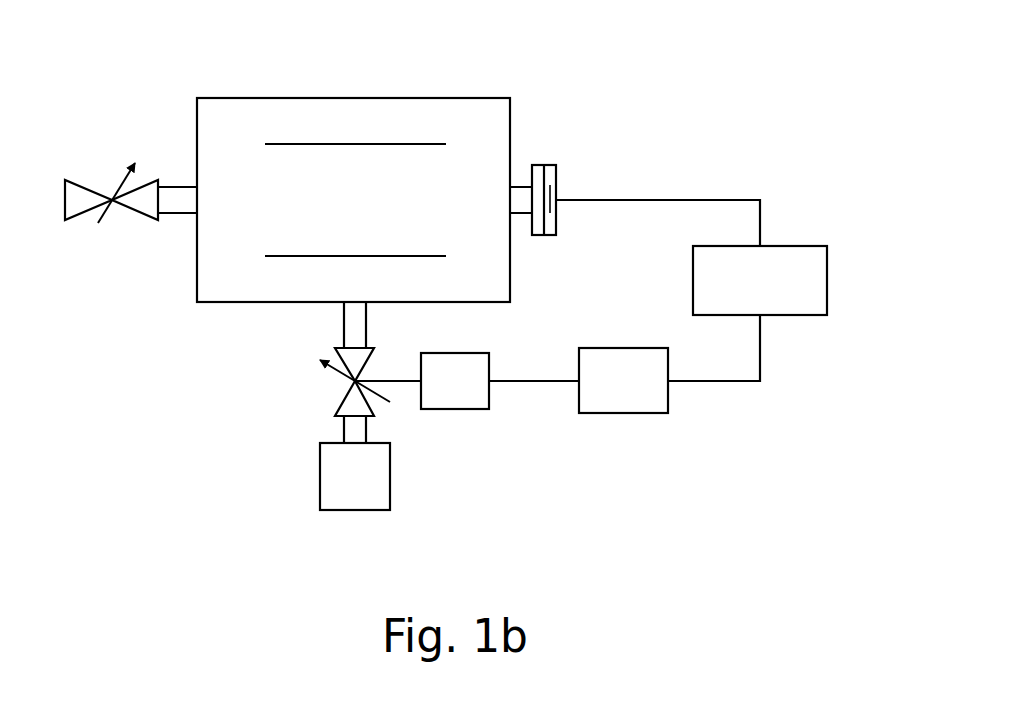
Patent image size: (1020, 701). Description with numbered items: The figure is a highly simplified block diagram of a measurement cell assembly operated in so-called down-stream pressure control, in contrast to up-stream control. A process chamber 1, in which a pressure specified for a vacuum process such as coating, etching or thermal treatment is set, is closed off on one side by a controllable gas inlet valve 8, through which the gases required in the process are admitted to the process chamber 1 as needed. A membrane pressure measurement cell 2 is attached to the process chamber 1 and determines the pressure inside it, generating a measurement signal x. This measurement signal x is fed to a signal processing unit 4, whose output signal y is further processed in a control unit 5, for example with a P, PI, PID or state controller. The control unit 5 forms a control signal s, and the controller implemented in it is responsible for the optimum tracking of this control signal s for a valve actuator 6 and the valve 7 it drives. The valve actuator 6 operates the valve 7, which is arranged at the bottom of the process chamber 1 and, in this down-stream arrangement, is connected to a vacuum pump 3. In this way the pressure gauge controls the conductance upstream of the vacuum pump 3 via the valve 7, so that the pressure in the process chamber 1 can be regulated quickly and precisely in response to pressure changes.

The process chamber 1 is at (472, 122).
The membrane pressure measurement cell 2 is at (548, 163).
The vacuum pump 3 is at (318, 472).
The signal processing unit 4 is at (830, 279).
The control unit 5 is at (620, 415).
The valve actuator 6 is at (444, 412).
The valve 7 is at (337, 397).
The controllable gas inlet valve 8 is at (117, 224).
The measurement signal x is at (643, 198).
The output signal y is at (763, 349).
The control signal s is at (523, 384).